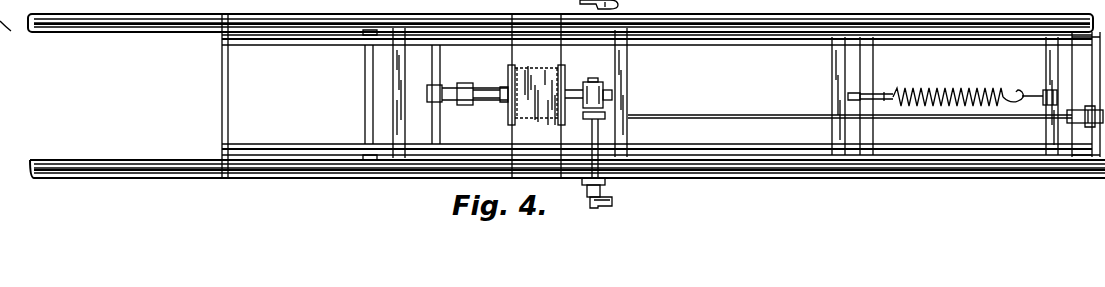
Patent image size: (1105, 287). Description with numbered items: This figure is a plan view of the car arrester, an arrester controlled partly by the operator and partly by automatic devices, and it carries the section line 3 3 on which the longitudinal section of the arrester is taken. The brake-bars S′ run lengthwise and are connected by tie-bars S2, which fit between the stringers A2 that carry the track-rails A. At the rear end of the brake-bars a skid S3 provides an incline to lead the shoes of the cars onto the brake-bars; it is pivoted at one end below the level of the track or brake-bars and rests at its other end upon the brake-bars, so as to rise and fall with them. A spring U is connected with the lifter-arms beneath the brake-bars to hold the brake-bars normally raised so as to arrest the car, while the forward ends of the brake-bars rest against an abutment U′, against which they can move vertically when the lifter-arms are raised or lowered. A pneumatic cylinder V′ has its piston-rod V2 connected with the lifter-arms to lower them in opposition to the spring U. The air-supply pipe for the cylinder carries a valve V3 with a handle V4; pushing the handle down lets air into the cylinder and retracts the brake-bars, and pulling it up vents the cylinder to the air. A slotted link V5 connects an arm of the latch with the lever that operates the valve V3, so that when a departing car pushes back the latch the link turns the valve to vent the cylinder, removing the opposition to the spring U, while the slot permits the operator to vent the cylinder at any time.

The track-rails A is at (753, 168).
The stringers A2 is at (138, 34).
The brake-bars S′ is at (742, 45).
The tie-bars S2 is at (393, 123).
The skid S3 is at (327, 42).
The pneumatic cylinder V′ is at (520, 77).
The piston-rod V2 is at (490, 102).
The valve V3 is at (593, 82).
The handle V4 is at (613, 205).
The slotted link V5 is at (798, 111).
The spring U is at (948, 88).
The abutment U′ is at (1095, 152).
The section line 3 is at (270, 128).